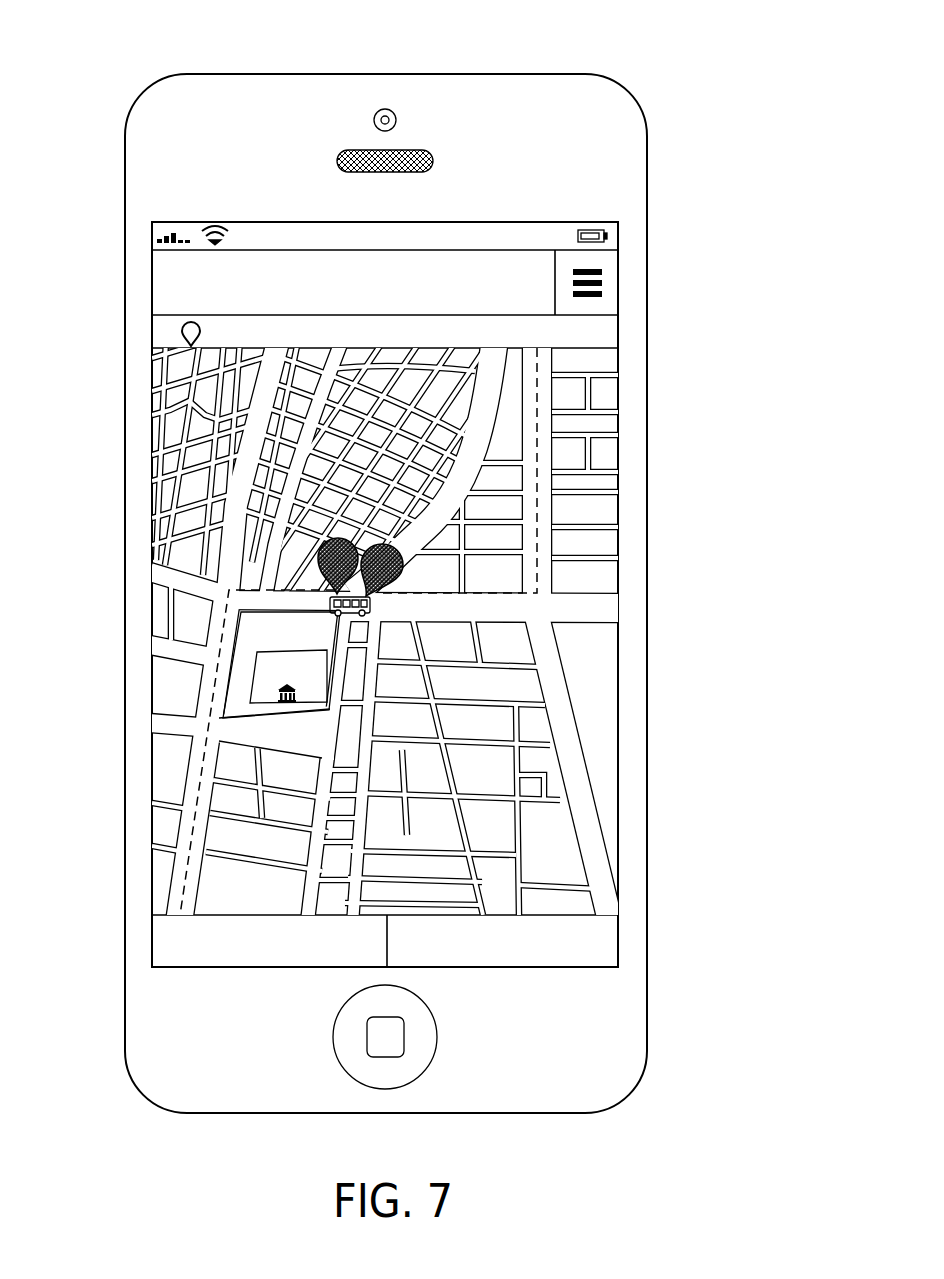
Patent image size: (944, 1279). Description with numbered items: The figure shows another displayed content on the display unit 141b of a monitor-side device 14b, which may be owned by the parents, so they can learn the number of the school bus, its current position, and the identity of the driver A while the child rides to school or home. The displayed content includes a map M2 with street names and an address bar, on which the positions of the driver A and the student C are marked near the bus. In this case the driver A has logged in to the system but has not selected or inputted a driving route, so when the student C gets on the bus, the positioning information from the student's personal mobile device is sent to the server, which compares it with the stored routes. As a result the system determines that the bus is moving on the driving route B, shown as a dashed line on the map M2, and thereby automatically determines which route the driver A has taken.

The monitor-side device 14b is at (340, 74).
The display unit 141b is at (158, 283).
The map M2 is at (157, 497).
The driver A is at (327, 580).
The driving route B is at (213, 733).
The student C is at (376, 586).